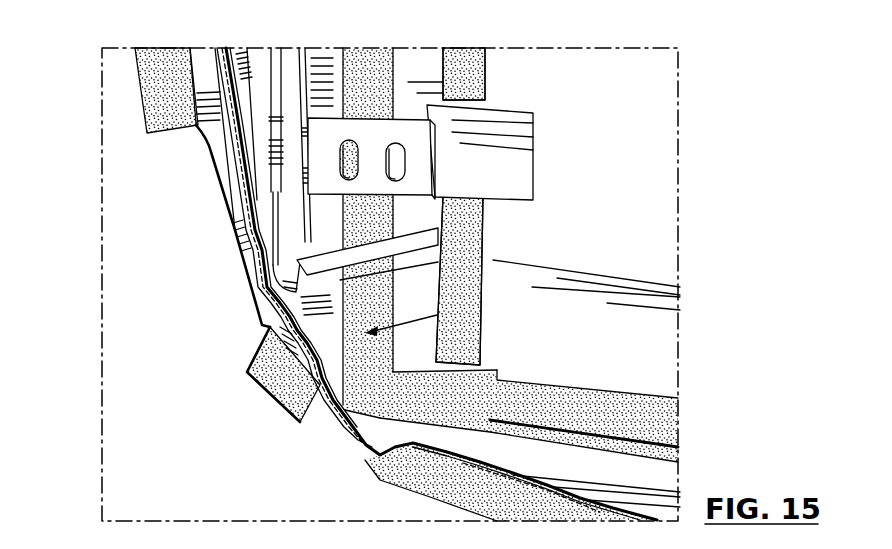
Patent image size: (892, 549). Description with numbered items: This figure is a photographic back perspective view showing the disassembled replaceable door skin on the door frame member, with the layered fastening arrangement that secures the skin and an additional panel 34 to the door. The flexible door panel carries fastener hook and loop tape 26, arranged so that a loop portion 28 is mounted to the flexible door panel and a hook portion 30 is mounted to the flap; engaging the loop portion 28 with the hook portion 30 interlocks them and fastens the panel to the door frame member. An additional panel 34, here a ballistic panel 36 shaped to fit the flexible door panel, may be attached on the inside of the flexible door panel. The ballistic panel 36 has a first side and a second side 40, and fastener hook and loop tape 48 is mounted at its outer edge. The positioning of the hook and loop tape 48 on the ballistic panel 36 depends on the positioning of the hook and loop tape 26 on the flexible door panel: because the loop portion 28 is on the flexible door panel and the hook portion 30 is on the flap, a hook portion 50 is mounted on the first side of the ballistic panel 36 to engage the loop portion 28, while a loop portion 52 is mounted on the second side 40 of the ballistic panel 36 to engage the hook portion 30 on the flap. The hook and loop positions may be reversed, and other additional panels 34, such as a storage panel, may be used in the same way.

The fastener hook and loop tape 26 is at (293, 372).
The loop portion 28 is at (378, 372).
The hook portion 30 is at (160, 108).
The additional panel 34 is at (680, 223).
The ballistic panel 36 is at (633, 128).
The second side 40 is at (651, 322).
The fastener hook and loop tape 48 is at (665, 415).
The hook portion 50 is at (441, 64).
The loop portion 52 is at (645, 428).